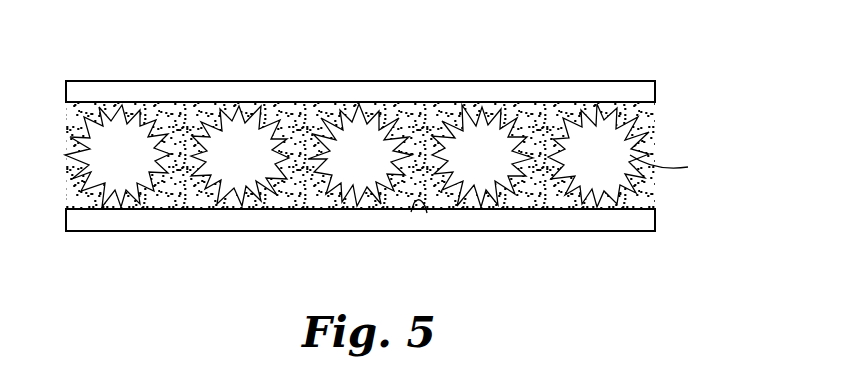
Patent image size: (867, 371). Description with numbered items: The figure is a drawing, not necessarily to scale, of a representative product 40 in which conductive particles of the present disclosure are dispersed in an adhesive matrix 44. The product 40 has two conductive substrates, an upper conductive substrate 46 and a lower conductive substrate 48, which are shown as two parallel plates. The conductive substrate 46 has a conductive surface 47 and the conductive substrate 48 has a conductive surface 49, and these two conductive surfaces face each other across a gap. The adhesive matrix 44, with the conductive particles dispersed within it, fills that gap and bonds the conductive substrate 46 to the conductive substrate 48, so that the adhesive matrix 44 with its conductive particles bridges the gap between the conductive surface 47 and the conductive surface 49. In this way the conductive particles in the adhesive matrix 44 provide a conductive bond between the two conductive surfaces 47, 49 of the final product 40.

The product 40 is at (410, 151).
The adhesive matrix 44 is at (304, 196).
The conductive substrate 46 is at (547, 92).
The conductive surface 47 is at (178, 104).
The conductive substrate 48 is at (545, 220).
The conductive surface 49 is at (427, 213).